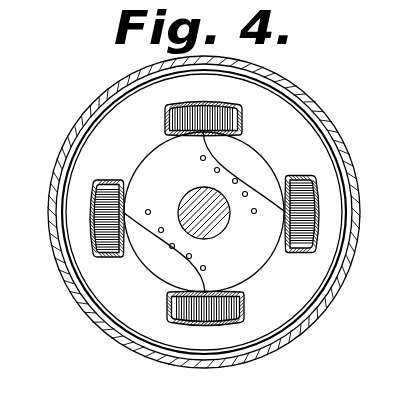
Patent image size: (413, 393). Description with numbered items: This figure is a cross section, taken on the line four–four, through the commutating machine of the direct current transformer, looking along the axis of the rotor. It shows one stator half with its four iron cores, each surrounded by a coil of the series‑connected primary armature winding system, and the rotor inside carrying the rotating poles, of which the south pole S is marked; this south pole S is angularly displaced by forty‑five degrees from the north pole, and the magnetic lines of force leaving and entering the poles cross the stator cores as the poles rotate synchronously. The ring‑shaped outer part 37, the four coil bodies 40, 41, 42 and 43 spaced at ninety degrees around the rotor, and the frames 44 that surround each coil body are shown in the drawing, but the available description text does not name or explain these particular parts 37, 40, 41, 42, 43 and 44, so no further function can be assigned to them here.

The outer casing ring 37 is at (331, 122).
The upper electromagnet coil 40 is at (222, 121).
The left electromagnet coil 41 is at (109, 194).
The lower electromagnet coil 42 is at (183, 309).
The right electromagnet coil 43 is at (300, 240).
The coil frame 44 is at (200, 102).
The south pole S is at (178, 260).